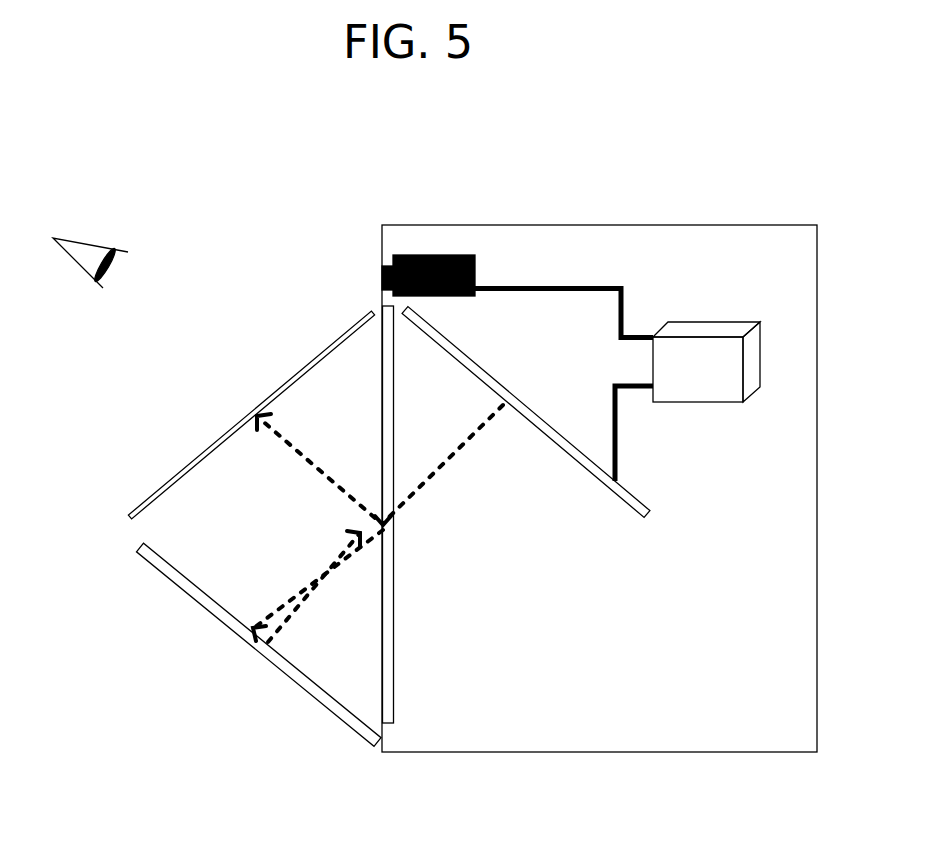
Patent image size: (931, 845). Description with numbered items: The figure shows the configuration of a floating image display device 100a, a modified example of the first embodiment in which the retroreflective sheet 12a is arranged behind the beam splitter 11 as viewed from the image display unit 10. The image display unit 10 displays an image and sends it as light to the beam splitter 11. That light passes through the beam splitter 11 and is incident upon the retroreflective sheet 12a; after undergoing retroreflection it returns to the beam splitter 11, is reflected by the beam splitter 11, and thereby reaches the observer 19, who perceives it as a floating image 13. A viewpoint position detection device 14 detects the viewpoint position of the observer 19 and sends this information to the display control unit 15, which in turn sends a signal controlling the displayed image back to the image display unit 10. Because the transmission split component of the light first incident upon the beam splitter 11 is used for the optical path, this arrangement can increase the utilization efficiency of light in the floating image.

The floating image display device 100a is at (587, 227).
The image display unit 10 is at (490, 375).
The beam splitter 11 is at (393, 650).
The retroreflective sheet 12a is at (338, 717).
The floating image 13 is at (157, 497).
The viewpoint position detection device 14 is at (475, 270).
The display control unit 15 is at (685, 337).
The observer 19 is at (110, 249).